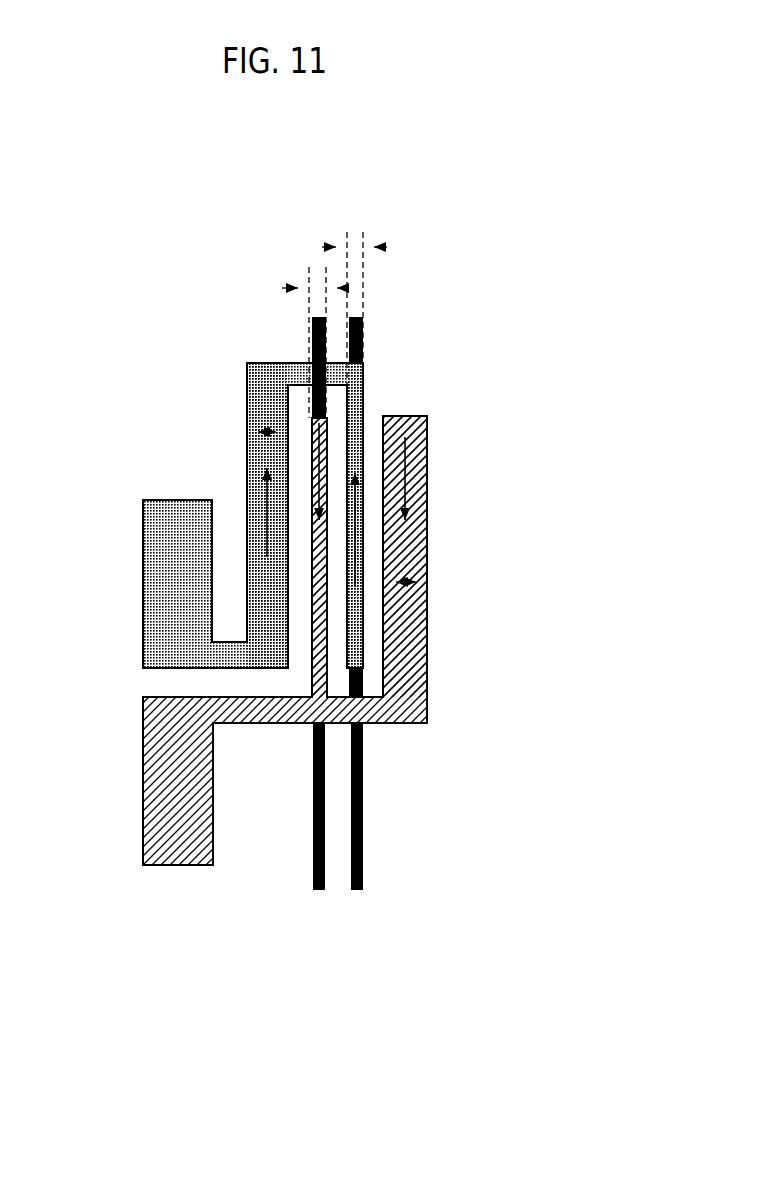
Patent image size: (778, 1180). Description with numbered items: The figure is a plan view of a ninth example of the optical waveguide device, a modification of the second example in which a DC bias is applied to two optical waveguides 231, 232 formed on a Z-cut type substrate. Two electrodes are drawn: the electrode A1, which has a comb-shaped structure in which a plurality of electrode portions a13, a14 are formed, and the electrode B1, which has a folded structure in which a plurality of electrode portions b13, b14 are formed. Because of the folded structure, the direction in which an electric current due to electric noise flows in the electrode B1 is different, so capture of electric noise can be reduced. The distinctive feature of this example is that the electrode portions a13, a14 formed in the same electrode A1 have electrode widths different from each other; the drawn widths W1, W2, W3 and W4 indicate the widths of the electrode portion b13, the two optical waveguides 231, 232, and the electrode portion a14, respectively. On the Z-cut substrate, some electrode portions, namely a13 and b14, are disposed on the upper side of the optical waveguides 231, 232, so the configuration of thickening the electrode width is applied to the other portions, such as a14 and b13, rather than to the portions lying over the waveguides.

The electrode B1 is at (275, 498).
The electrode A1 is at (308, 697).
The electrode portion b13 is at (270, 400).
The electrode portion b14 is at (357, 400).
The electrode portion a13 is at (323, 688).
The electrode portion a14 is at (418, 485).
The optical waveguide 231 is at (313, 862).
The optical waveguide 232 is at (363, 860).
The width W1 of branch portion b13 W1 is at (246, 440).
The width W2 of through conductor 231 W2 is at (293, 291).
The width W3 of through conductor 232 W3 is at (374, 248).
The width W4 of branch portion a14 W4 is at (405, 590).